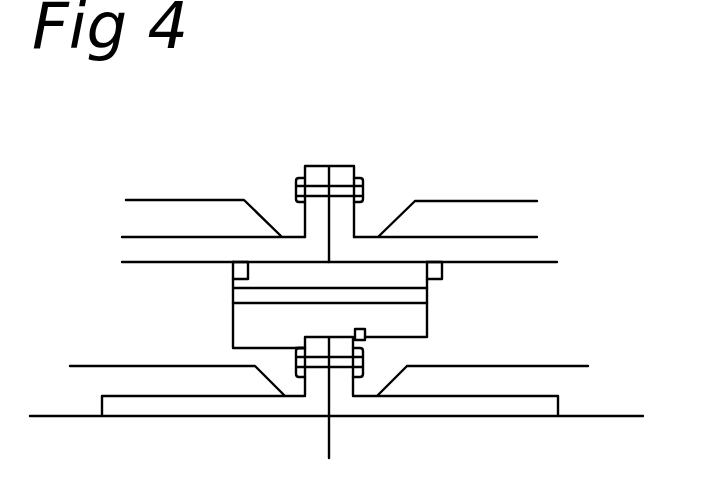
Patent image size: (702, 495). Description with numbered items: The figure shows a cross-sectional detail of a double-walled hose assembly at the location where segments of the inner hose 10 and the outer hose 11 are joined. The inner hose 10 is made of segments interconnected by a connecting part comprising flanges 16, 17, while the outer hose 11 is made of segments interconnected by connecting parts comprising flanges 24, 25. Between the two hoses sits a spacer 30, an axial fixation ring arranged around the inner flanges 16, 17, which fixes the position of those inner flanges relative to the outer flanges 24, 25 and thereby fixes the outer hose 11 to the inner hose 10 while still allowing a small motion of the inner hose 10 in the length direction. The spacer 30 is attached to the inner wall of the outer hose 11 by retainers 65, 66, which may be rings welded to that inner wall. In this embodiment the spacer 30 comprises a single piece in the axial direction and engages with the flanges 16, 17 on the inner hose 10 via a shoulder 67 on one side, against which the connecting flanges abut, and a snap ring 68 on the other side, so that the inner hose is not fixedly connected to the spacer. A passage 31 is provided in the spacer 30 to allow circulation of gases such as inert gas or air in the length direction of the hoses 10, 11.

The inner hose 10 is at (540, 380).
The outer hose 11 is at (517, 213).
The flange 16 is at (343, 378).
The flange 17 is at (318, 385).
The flange 24 is at (340, 170).
The flange 25 is at (316, 173).
The spacer 30 is at (245, 317).
The passage 31 is at (410, 297).
The retainer 65 is at (435, 268).
The retainer 66 is at (228, 262).
The shoulder 67 is at (305, 340).
The snap ring 68 is at (366, 337).